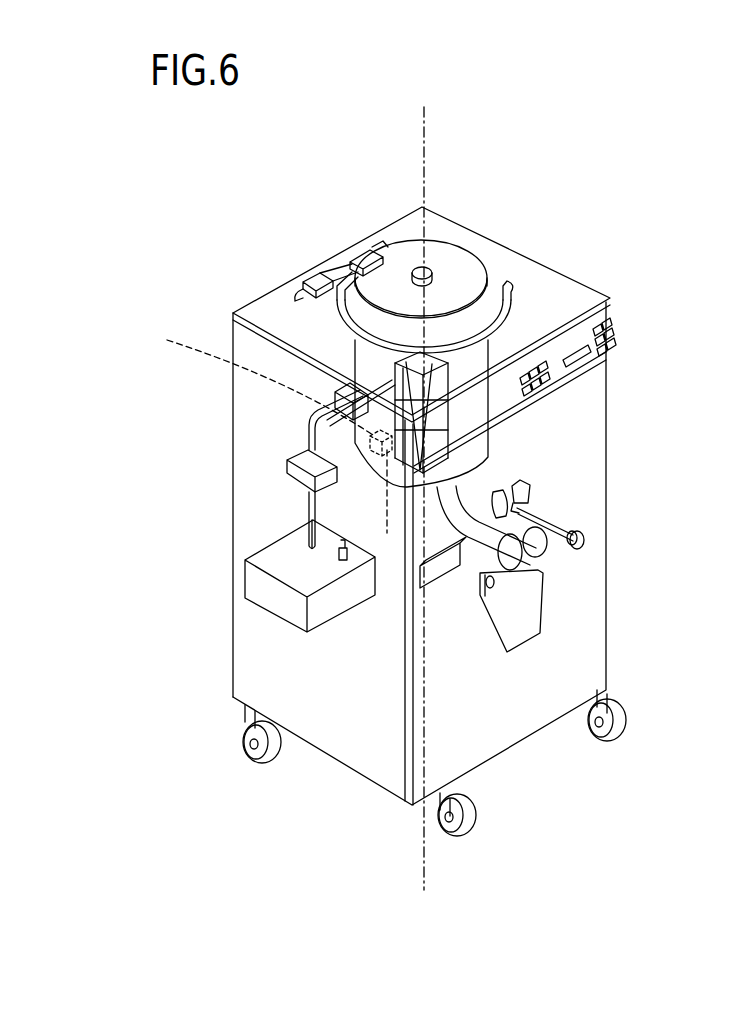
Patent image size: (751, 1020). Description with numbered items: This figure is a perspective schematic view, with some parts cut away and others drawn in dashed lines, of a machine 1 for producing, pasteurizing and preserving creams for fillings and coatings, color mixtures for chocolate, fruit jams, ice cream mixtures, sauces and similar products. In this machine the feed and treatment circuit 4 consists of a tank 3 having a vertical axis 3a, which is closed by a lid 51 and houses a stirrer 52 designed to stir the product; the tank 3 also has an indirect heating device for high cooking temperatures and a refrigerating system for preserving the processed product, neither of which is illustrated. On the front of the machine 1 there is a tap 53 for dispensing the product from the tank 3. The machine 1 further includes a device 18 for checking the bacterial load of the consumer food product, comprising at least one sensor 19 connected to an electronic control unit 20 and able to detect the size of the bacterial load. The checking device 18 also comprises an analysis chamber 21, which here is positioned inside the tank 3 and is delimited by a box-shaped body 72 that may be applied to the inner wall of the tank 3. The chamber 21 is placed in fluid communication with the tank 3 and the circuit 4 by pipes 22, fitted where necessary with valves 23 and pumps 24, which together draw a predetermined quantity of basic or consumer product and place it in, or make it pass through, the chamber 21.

The machine 1 is at (528, 190).
The tank 3 is at (497, 392).
The vertical axis 3a is at (424, 140).
The feed and treatment circuit 4 is at (302, 534).
The device for checking the bacterial load 18 is at (277, 415).
The sensor 19 is at (343, 562).
The electronic control unit 20 is at (456, 567).
The analysis chamber 21 is at (258, 817).
The pipes 22 is at (305, 502).
The valves 23 is at (287, 468).
The pumps 24 is at (333, 395).
The lid 51 is at (473, 277).
The stirrer 52 is at (450, 430).
The tap 53 is at (530, 582).
The box-shaped body 72 is at (370, 453).